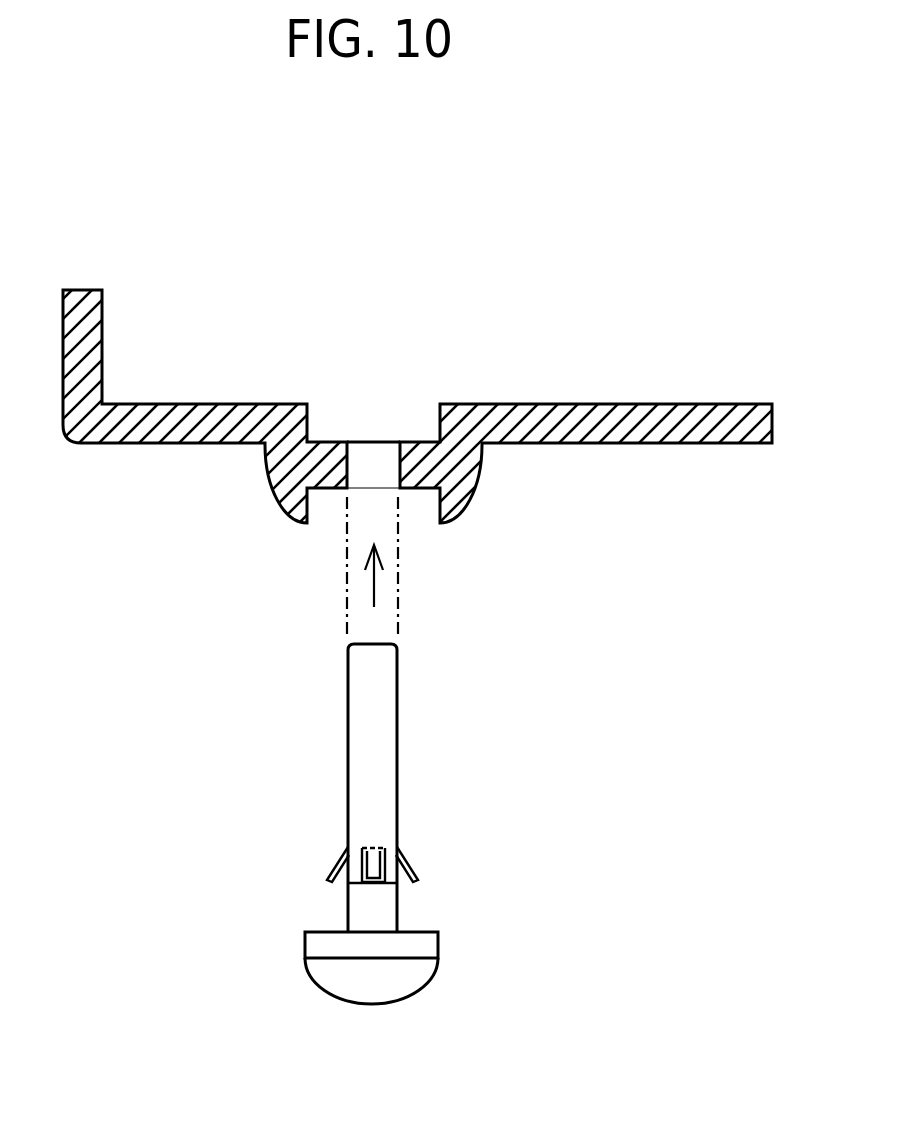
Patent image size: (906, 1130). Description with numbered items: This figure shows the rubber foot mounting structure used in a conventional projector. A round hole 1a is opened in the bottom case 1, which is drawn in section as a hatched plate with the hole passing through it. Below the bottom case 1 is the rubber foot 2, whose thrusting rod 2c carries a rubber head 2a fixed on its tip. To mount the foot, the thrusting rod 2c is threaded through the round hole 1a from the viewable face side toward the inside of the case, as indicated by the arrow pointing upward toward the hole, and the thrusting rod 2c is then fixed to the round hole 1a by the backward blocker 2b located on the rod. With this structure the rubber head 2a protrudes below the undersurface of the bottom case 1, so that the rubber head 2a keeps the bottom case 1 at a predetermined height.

The bottom case 1 is at (642, 443).
The round hole 1a is at (392, 466).
The rubber foot 2 is at (381, 882).
The rubber head 2a is at (390, 1003).
The backward blocker 2b is at (418, 880).
The thrusting rod 2c is at (398, 740).